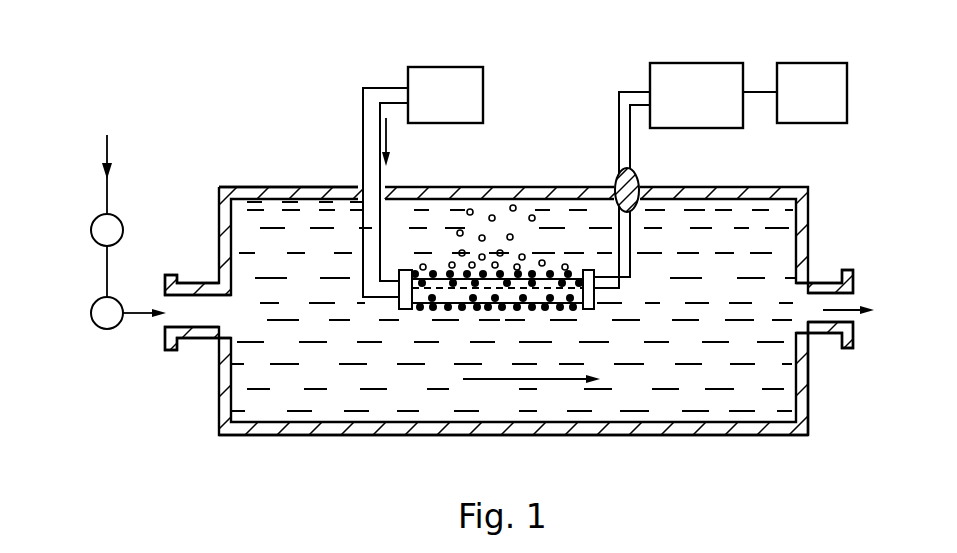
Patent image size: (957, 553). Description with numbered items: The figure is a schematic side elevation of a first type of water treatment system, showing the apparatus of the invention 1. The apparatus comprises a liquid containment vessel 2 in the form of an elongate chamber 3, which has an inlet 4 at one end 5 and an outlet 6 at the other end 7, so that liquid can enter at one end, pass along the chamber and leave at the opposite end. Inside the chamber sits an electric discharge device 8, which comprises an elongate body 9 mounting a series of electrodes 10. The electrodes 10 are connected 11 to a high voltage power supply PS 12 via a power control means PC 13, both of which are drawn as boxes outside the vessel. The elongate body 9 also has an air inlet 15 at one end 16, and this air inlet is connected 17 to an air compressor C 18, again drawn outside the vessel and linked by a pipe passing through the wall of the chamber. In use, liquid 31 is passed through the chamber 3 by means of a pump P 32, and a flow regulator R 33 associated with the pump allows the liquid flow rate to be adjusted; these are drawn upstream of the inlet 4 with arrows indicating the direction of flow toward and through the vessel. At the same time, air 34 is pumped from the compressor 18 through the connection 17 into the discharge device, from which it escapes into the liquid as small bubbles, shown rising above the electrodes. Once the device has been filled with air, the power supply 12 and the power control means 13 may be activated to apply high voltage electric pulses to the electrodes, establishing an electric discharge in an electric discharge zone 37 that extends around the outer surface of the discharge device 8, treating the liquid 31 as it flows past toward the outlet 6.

The apparatus of the invention 1 is at (203, 401).
The liquid containment vessel 2 is at (253, 180).
The elongate chamber 3 is at (667, 437).
The inlet 4 is at (187, 287).
The one end 5 is at (220, 357).
The outlet 6 is at (830, 337).
The other end 7 is at (808, 416).
The electric discharge device 8 is at (444, 258).
The elongate body 9 is at (494, 282).
The electrodes 10 is at (450, 314).
The connection 11 is at (618, 120).
The high voltage power supply 12 is at (807, 63).
The power control means 13 is at (698, 63).
The air inlet 15 is at (397, 290).
The one end 16 is at (399, 285).
The connection 17 is at (363, 152).
The air compressor 18 is at (459, 83).
The liquid 31 is at (347, 395).
The pump 32 is at (110, 214).
The flow regulator 33 is at (107, 329).
The air 34 is at (372, 122).
The electric discharge zone 37 is at (492, 320).